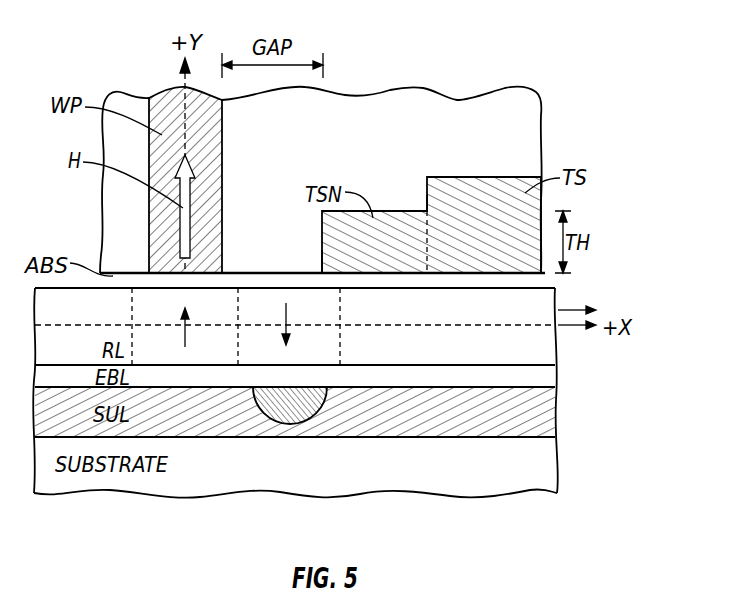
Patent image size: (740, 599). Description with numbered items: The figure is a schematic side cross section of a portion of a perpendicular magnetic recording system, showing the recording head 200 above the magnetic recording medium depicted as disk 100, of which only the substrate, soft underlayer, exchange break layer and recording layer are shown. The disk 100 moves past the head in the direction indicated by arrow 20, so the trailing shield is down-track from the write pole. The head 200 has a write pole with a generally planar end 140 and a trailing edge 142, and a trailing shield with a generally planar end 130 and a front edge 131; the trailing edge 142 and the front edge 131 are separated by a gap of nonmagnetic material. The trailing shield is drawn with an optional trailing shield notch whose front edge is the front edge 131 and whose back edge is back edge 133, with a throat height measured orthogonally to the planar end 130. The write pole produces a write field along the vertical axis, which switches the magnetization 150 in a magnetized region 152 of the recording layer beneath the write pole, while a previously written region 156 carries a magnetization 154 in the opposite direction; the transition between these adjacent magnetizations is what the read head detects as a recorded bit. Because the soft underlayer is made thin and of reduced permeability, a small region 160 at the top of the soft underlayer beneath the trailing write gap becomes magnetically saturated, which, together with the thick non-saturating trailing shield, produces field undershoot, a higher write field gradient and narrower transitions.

The recording head 200 is at (533, 69).
The disk 100 is at (598, 480).
The arrow indicating direction of disk motion 20 is at (570, 307).
The planar end of trailing shield 130 is at (403, 274).
The front edge of trailing shield 131 is at (322, 270).
The back edge of trailing shield notch 133 is at (427, 210).
The planar end of write pole 140 is at (143, 308).
The trailing edge of write pole 142 is at (224, 270).
The magnetization 150 is at (197, 320).
The magnetized region 152 is at (149, 274).
The magnetization of previously written region 154 is at (289, 322).
The previously written region 156 is at (330, 317).
The magnetically saturated region of SUL 160 is at (292, 413).